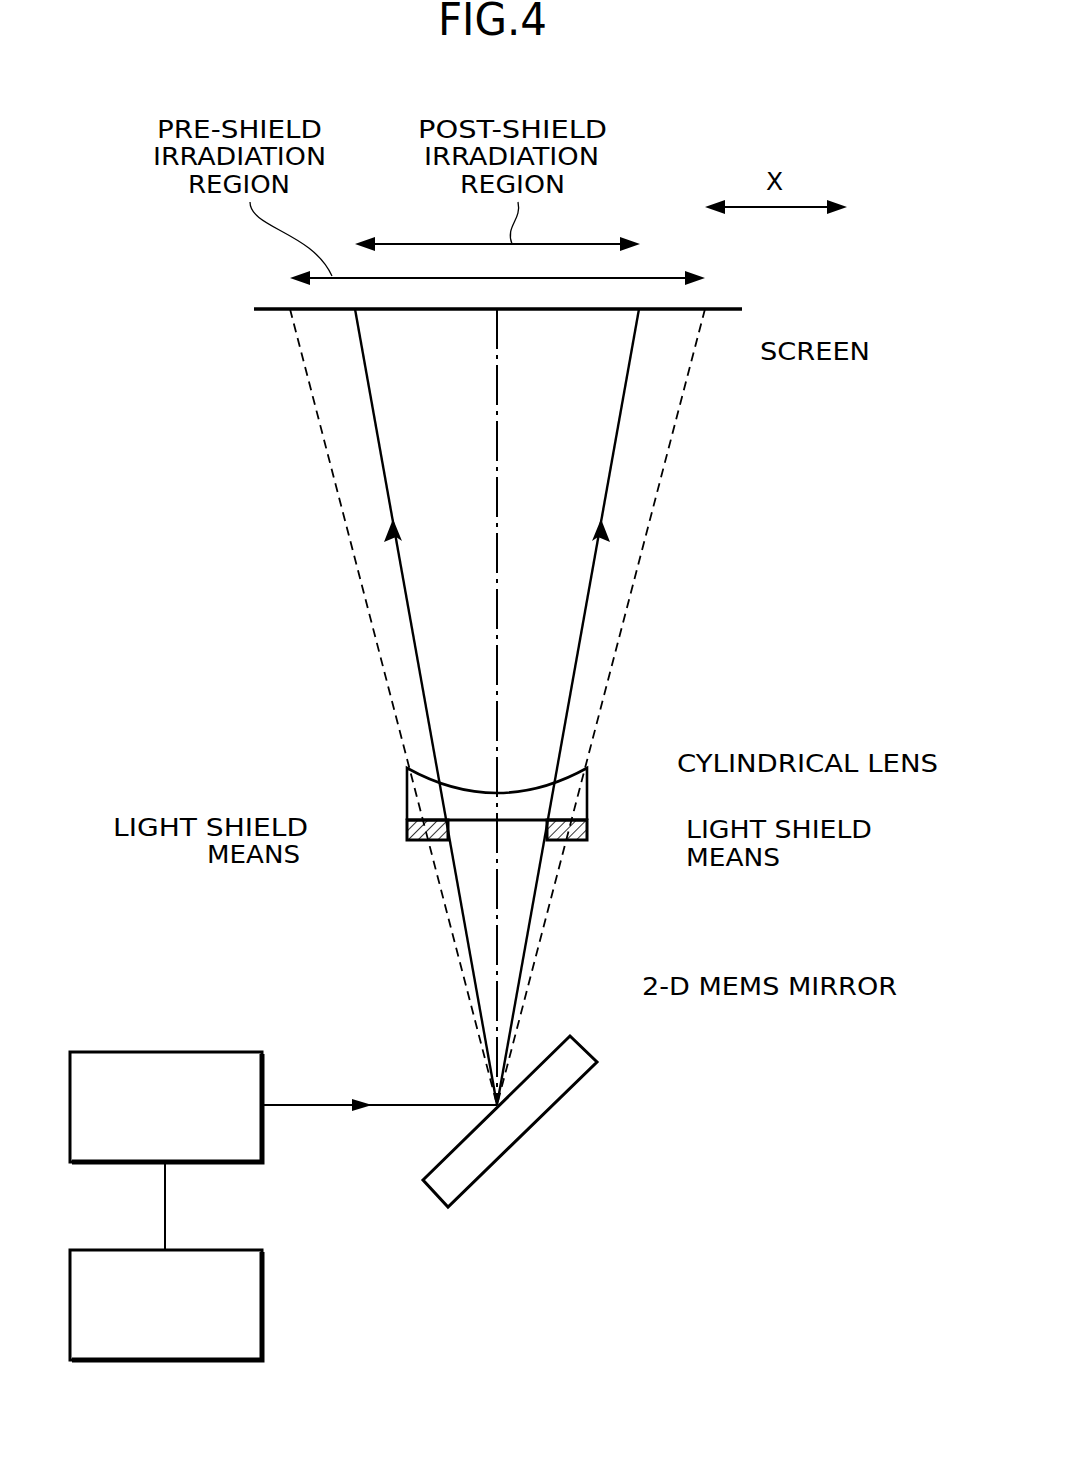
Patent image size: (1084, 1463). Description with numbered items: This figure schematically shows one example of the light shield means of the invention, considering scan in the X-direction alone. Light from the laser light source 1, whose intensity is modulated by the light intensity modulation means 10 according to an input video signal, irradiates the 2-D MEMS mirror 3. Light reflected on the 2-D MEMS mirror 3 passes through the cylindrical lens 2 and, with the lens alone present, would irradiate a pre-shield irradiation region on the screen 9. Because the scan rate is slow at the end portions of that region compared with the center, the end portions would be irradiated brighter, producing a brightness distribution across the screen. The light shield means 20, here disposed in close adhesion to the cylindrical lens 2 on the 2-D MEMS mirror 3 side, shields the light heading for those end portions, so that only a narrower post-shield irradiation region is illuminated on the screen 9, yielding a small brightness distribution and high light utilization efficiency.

The laser light source 1 is at (207, 1052).
The cylindrical lens 2 is at (587, 796).
The 2-D MEMS mirror 3 is at (577, 1053).
The screen 9 is at (677, 309).
The light intensity modulation means 10 is at (208, 1248).
The light shield means 20 is at (407, 834).